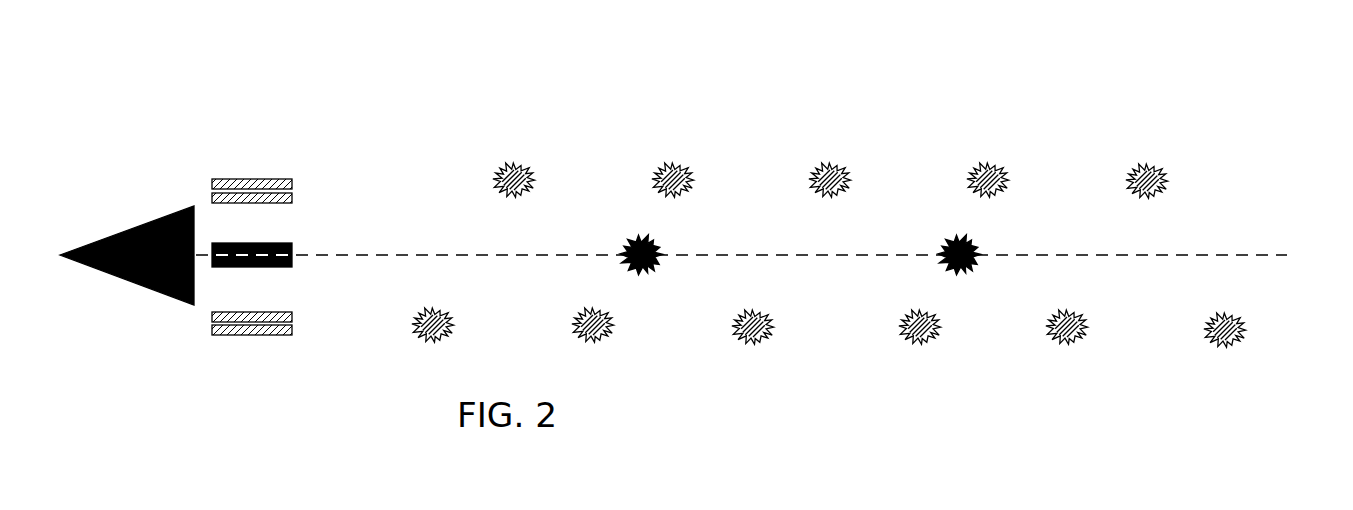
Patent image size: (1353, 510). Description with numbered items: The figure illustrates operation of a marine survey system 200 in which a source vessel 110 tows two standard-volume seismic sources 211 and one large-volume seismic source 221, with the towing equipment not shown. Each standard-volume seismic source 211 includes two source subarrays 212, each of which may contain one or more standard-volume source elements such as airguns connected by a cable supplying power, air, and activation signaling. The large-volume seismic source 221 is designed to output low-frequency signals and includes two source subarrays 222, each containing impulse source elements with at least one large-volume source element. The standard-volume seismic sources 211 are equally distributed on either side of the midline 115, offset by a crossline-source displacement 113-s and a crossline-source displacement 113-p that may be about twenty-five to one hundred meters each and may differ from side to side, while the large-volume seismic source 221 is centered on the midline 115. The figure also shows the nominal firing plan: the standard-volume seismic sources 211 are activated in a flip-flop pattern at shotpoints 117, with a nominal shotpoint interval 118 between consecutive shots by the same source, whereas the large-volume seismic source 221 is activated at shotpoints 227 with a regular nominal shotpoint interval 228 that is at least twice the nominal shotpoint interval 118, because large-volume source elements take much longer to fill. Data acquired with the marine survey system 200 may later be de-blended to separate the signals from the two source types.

The marine survey system 200 is at (1217, 83).
The source vessel 110 is at (109, 211).
The midline 115 is at (448, 254).
The crossline-source displacement 113-p is at (319, 257).
The crossline-source displacement 113-s is at (318, 205).
The standard-volume seismic source 211 is at (234, 168).
The source subarray 212 is at (293, 199).
The source subarray 222 is at (293, 262).
The large-volume seismic source 221 is at (284, 278).
The shotpoint 117 is at (671, 160).
The shotpoint 227 is at (656, 268).
The nominal shotpoint interval 228 is at (957, 357).
The nominal shotpoint interval 118 is at (1223, 355).